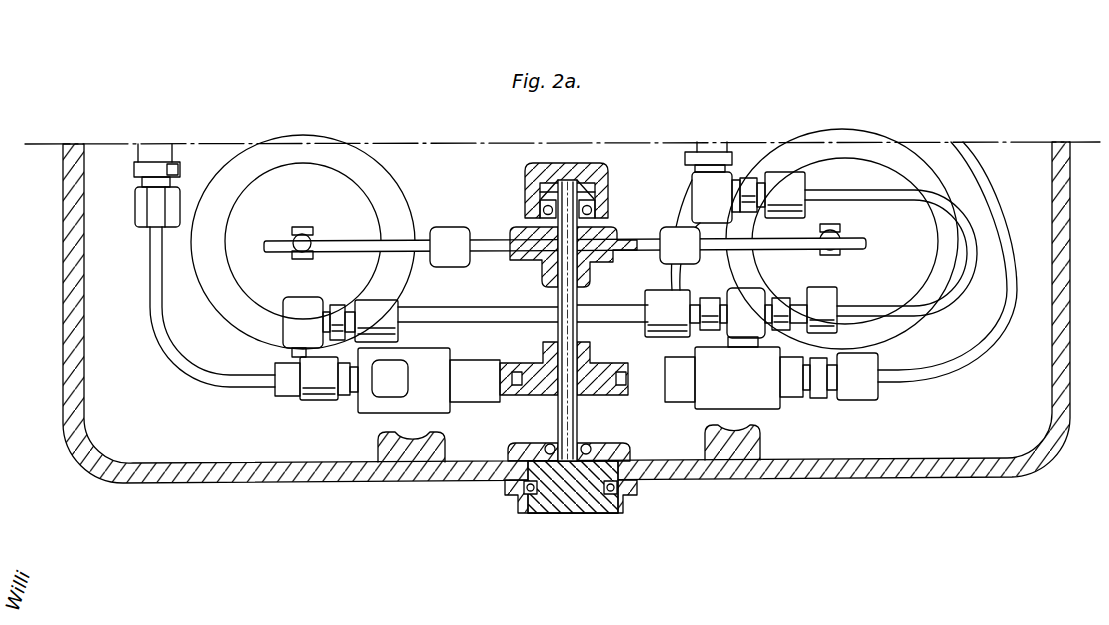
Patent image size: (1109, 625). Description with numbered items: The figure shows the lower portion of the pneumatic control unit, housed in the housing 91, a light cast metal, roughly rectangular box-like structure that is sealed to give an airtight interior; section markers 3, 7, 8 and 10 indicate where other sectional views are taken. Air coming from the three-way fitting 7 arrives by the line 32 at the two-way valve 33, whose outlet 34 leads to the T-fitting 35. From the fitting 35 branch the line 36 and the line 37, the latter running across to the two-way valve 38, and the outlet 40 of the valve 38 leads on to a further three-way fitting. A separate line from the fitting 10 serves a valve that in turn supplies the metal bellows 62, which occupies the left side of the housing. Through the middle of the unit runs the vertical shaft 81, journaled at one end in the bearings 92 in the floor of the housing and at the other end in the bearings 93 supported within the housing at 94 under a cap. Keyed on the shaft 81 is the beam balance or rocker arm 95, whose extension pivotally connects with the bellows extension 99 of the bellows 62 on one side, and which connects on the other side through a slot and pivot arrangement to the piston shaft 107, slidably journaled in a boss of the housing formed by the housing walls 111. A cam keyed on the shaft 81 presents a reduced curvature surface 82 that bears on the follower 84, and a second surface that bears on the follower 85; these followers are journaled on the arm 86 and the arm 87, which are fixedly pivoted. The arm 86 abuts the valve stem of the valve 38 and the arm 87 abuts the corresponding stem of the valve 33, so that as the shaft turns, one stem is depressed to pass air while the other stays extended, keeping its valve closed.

The section line 3- 3 is at (478, 522).
The three-way fitting, or T 7 is at (962, 495).
The section line 8- 8 is at (28, 260).
The fitting 10 is at (55, 357).
The line 32 is at (970, 360).
The two-way valve 33 is at (762, 389).
The outlet 34 is at (680, 341).
The T-fitting 35 is at (741, 312).
The line 36 is at (927, 277).
The line 37 is at (510, 297).
The two-way valve 38 is at (436, 396).
The outlet 40 is at (213, 388).
The metal bellows 62 is at (253, 297).
The shaft 81 is at (600, 184).
The reduced curvature cam surface 82 is at (593, 392).
The follower 84 is at (517, 386).
The follower 85 is at (630, 397).
The arm 86 is at (478, 368).
The arm 87 is at (657, 383).
The housing 91 is at (191, 483).
The bearings 92 is at (630, 487).
The bearings 93 is at (538, 223).
The journal location in housing 94 is at (525, 167).
The beam balance or rocker arm 95 is at (424, 241).
The bellows extension 99 is at (297, 233).
The piston shaft 107 is at (838, 231).
The housing walls 111 is at (851, 135).